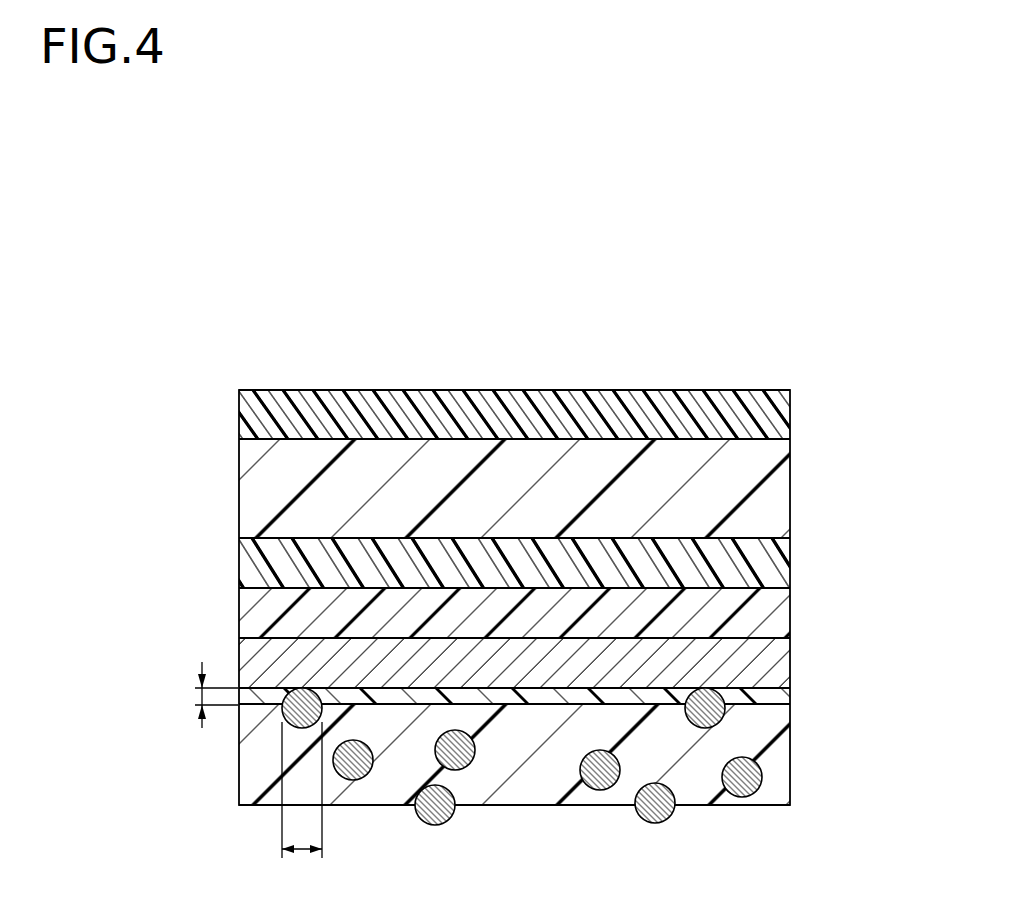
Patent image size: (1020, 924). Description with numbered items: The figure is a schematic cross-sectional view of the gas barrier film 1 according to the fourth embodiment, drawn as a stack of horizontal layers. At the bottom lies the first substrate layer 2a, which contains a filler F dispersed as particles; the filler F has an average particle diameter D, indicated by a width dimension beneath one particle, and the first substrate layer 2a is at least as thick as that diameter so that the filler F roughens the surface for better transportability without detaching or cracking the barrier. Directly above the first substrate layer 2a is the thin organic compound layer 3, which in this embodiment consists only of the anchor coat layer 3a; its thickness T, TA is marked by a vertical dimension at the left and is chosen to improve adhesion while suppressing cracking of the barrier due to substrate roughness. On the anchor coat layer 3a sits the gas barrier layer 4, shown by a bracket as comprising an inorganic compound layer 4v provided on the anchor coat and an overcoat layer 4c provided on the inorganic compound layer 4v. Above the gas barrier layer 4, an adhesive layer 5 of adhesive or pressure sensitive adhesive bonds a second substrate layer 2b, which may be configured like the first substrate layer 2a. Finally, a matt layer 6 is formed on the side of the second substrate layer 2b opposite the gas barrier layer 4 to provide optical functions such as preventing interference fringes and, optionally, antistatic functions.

The gas barrier film 1 is at (773, 342).
The matt layer 6 is at (778, 415).
The second substrate layer 2b is at (778, 489).
The adhesive layer 5 is at (778, 566).
The gas barrier layer 4 is at (574, 638).
The overcoat layer 4c is at (778, 619).
The inorganic compound layer 4v is at (556, 663).
The organic compound layer 3 is at (569, 705).
The anchor coat layer 3a is at (778, 700).
The first substrate layer 2a is at (778, 753).
The filler F is at (435, 826).
The average particle diameter D is at (301, 855).
The thickness T is at (176, 695).
The thickness of the anchor coat layer TA is at (200, 698).